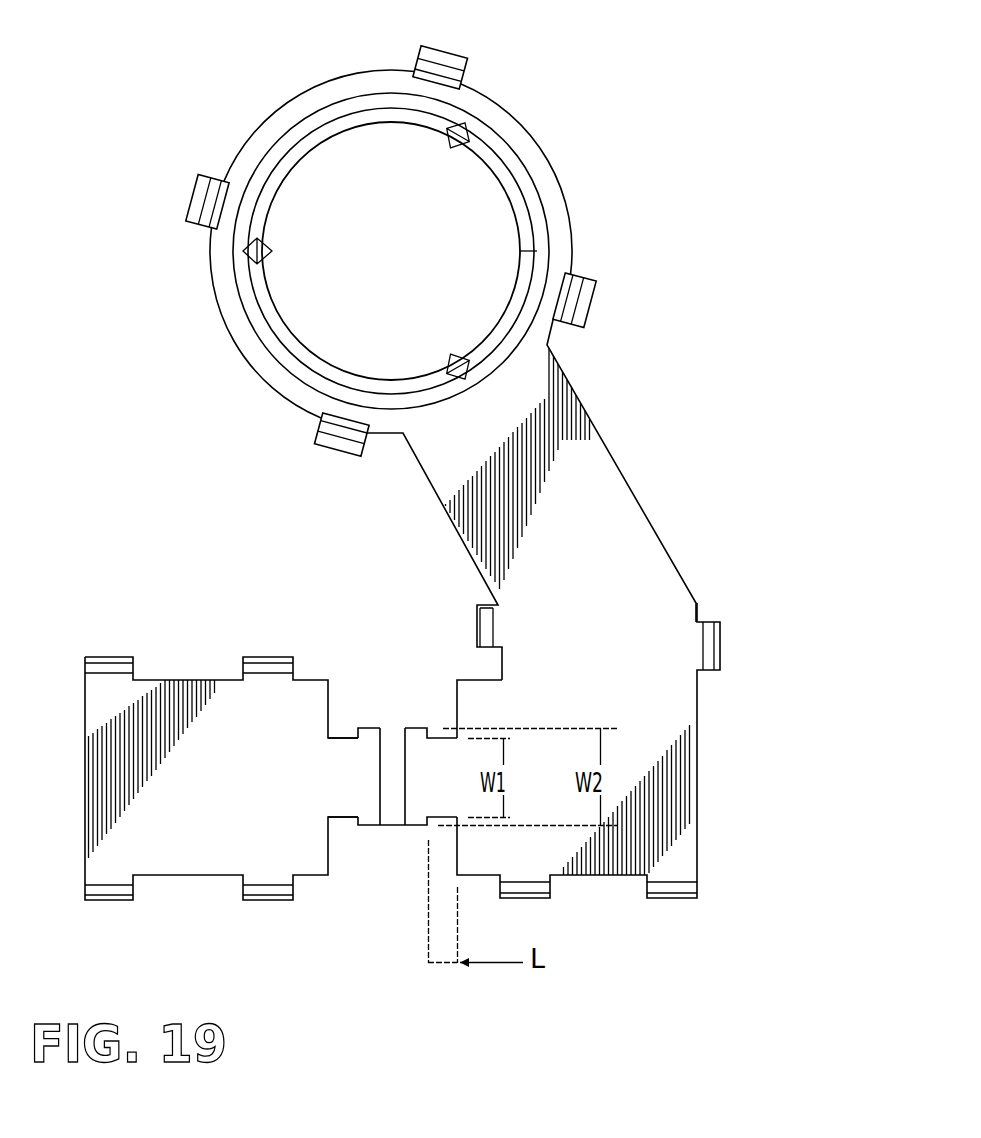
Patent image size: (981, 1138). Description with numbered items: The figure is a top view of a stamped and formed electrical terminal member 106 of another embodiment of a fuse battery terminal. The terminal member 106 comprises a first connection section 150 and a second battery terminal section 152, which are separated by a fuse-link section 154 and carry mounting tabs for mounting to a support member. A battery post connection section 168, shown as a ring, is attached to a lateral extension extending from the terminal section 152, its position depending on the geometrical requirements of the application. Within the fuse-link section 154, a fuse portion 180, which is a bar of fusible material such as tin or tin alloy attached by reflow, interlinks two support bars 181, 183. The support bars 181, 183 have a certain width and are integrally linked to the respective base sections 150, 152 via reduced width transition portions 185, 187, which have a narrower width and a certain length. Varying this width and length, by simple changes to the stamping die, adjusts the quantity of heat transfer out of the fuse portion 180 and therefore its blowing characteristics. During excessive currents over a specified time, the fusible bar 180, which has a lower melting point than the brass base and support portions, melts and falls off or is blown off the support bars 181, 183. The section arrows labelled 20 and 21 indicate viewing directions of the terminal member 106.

The electrical terminal member 106 is at (181, 505).
The first connection section 150 is at (643, 913).
The second battery terminal section 152 is at (179, 615).
The fuse-link section 154 is at (360, 856).
The battery post connection section 168 is at (592, 203).
The fuse portion 180 is at (393, 817).
The support bar 181 is at (420, 738).
The support bar 183 is at (372, 738).
The reduced width transition portion 185 is at (442, 770).
The reduced width transition portion 187 is at (347, 750).
The view direction of FIG. 20 is at (507, 998).
The view direction of FIG. 21 is at (756, 583).